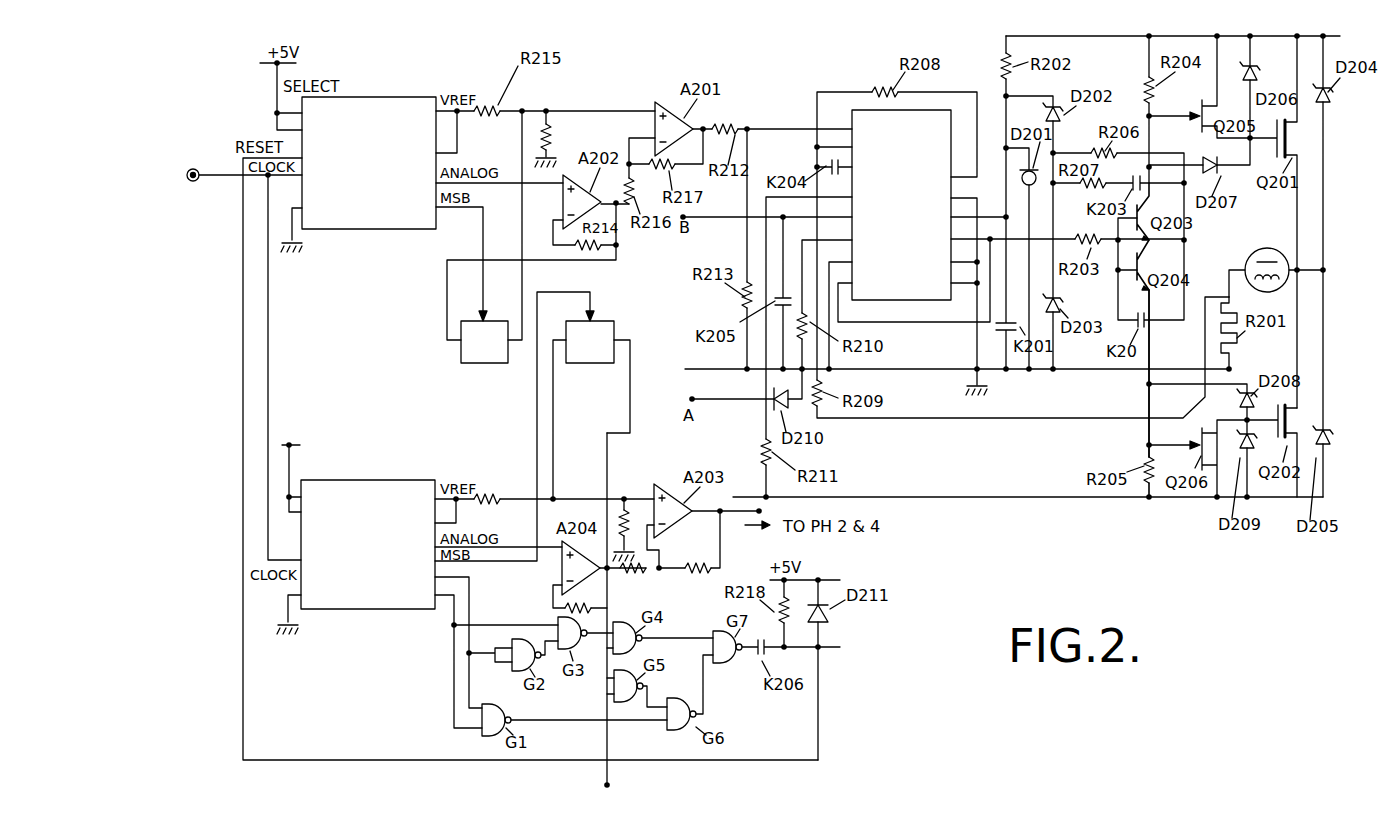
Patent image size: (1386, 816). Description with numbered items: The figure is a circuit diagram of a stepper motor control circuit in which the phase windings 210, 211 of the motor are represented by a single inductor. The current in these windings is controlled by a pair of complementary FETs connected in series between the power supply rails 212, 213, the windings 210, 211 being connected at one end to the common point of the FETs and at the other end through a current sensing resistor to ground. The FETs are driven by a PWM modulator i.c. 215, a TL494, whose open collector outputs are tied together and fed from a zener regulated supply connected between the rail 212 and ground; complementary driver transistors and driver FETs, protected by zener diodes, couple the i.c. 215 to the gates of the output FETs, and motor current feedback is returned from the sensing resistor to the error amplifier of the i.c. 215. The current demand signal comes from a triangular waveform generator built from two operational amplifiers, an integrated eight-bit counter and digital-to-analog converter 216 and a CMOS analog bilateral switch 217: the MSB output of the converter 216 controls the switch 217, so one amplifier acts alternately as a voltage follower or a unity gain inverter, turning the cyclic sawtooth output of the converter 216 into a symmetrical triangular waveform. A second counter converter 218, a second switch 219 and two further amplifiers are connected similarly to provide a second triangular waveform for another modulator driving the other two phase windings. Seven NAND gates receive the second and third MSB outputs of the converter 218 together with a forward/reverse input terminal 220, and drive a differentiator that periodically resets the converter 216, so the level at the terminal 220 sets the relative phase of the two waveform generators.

The phase winding 210 is at (1272, 265).
The phase winding 211 is at (1251, 262).
The power supply rail 212 is at (1164, 37).
The power supply rail 213 is at (1130, 502).
The PWM modulator i.c. 215 is at (901, 205).
The integrated 8-bit counter and digital-to-analog converter 216 is at (386, 96).
The CMOS analog bilateral switch 217 is at (470, 364).
The second counter converter 218 is at (378, 480).
The second switch 219 is at (607, 364).
The forward/reverse input terminal 220 is at (604, 786).